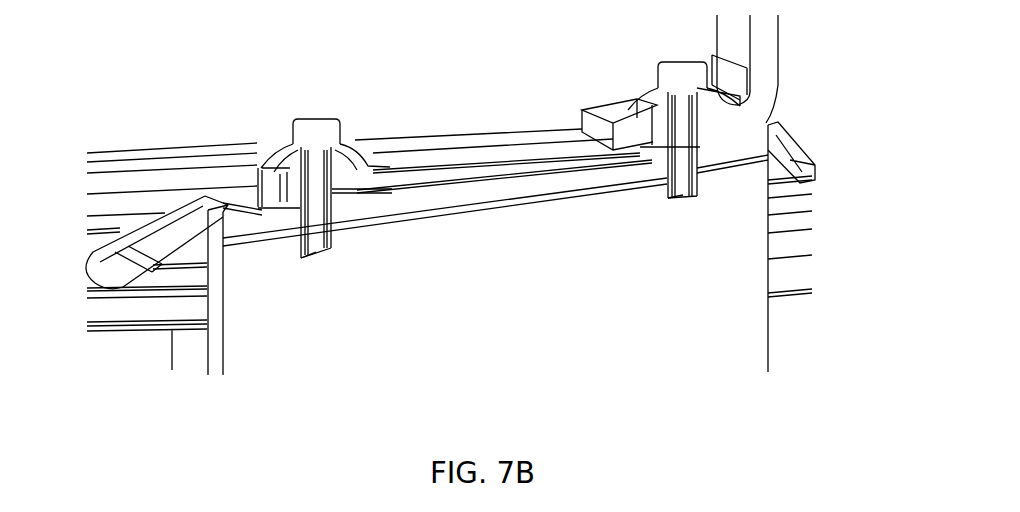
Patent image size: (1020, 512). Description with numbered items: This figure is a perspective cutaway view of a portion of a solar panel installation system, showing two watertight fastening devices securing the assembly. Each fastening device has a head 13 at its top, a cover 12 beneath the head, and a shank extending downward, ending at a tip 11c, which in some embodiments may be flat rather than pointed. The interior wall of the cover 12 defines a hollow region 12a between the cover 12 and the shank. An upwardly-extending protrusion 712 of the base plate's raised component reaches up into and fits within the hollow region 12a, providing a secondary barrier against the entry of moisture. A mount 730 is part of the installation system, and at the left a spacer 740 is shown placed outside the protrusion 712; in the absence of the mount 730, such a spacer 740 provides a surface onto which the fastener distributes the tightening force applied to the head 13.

The head 13 is at (335, 113).
The cover 12 is at (345, 133).
The hollow region 12a is at (337, 177).
The protrusion 712 is at (297, 180).
The tip 11c is at (310, 260).
The spacer 740 is at (253, 170).
The mount 730 is at (779, 47).